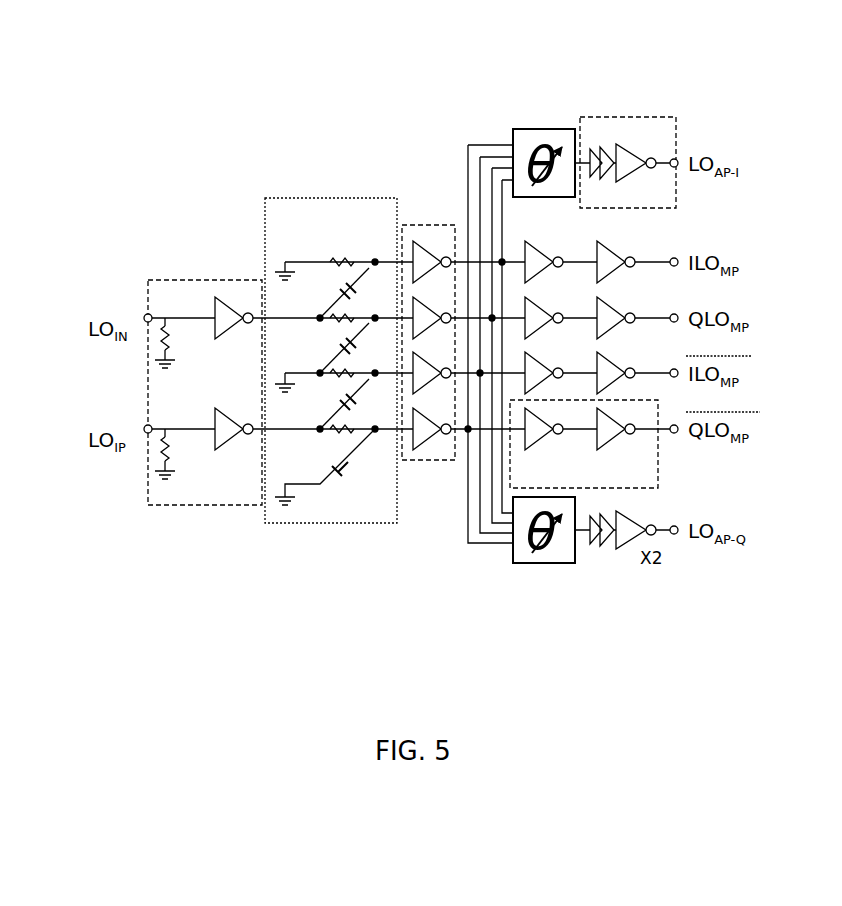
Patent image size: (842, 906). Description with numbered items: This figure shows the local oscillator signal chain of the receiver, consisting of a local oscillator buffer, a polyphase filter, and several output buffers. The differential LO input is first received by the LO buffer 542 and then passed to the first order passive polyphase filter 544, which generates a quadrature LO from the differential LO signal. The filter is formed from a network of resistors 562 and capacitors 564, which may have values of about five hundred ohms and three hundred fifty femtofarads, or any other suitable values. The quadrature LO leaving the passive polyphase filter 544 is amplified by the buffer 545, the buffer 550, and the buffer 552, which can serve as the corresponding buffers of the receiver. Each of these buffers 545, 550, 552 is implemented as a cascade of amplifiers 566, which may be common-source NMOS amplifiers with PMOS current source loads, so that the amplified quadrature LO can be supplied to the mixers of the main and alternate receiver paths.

The LO buffer 542 is at (207, 280).
The first order passive polyphase filter 544 is at (296, 351).
The buffer 545 is at (443, 220).
The buffer 550 is at (608, 118).
The buffer 552 is at (660, 450).
The resistor R2 562 is at (338, 257).
The capacitor C2 564 is at (296, 368).
The amplifier 566 is at (430, 452).